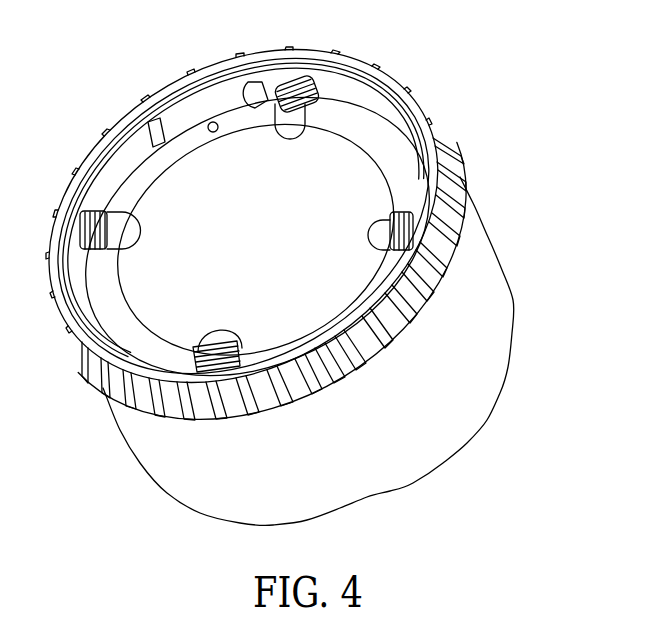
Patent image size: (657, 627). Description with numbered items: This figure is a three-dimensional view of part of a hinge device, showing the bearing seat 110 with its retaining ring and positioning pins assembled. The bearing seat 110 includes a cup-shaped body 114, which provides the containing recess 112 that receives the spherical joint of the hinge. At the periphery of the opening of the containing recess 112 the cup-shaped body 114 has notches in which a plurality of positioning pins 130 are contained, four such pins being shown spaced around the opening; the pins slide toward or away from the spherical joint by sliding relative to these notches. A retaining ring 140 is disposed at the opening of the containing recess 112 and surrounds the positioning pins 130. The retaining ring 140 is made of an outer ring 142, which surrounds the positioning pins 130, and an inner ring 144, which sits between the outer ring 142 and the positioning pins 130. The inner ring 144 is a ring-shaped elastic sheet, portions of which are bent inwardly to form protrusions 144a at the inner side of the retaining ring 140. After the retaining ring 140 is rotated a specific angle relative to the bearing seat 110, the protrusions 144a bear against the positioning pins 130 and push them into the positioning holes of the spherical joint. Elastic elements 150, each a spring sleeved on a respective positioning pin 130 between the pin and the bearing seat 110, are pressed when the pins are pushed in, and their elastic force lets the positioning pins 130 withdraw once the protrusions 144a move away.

The bearing seat 110 is at (356, 351).
The containing recess 112 is at (205, 180).
The cup-shaped body 114 is at (478, 295).
The positioning pins 130 is at (285, 117).
The retaining ring 140 is at (320, 245).
The outer ring 142 is at (437, 147).
The inner ring 144 is at (292, 215).
The protrusions 144a is at (125, 165).
The elastic elements 150 is at (300, 95).